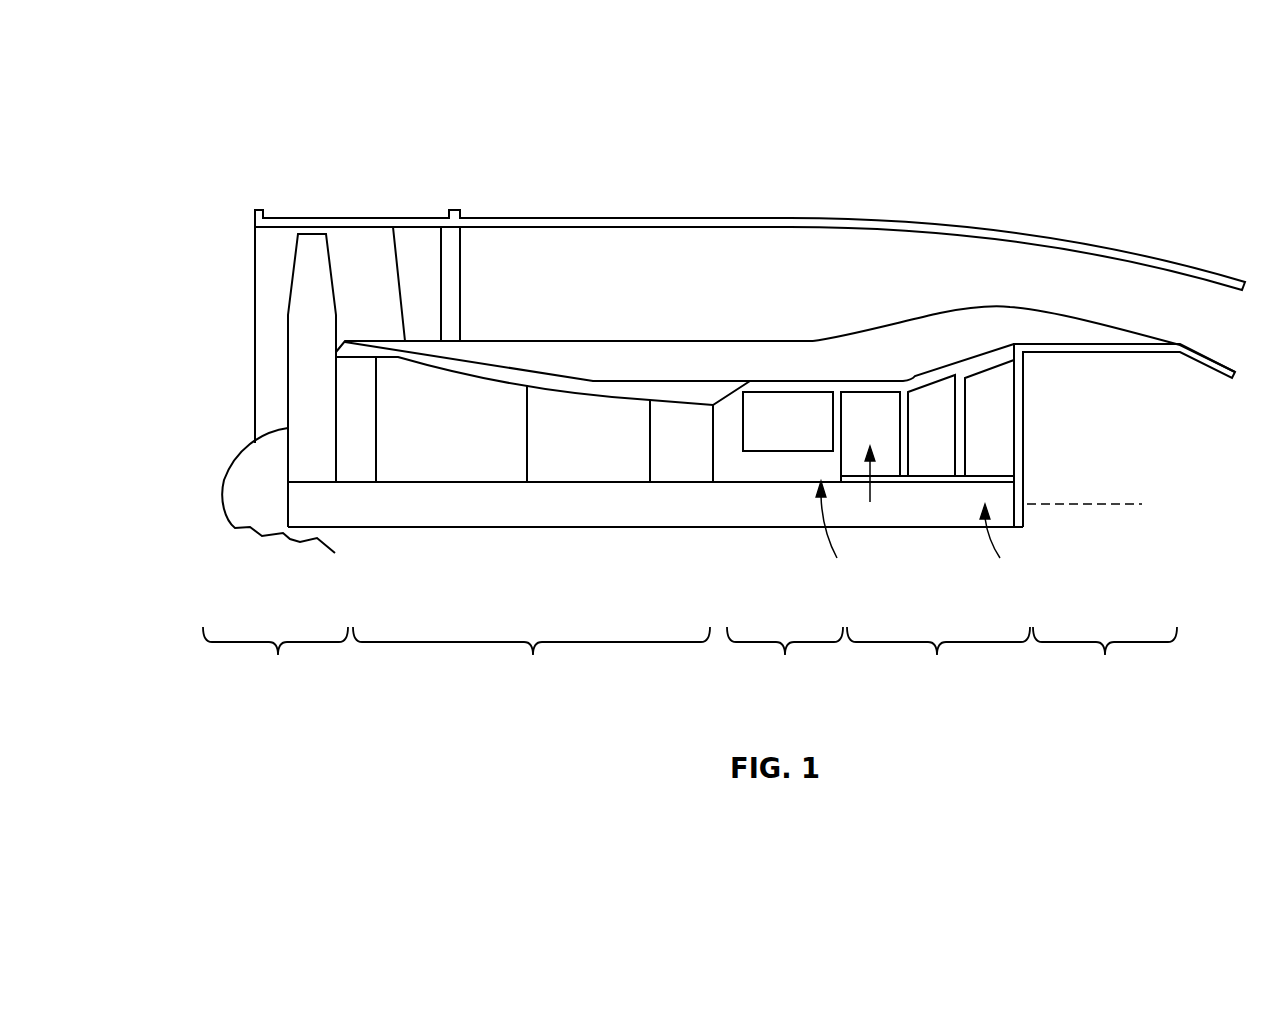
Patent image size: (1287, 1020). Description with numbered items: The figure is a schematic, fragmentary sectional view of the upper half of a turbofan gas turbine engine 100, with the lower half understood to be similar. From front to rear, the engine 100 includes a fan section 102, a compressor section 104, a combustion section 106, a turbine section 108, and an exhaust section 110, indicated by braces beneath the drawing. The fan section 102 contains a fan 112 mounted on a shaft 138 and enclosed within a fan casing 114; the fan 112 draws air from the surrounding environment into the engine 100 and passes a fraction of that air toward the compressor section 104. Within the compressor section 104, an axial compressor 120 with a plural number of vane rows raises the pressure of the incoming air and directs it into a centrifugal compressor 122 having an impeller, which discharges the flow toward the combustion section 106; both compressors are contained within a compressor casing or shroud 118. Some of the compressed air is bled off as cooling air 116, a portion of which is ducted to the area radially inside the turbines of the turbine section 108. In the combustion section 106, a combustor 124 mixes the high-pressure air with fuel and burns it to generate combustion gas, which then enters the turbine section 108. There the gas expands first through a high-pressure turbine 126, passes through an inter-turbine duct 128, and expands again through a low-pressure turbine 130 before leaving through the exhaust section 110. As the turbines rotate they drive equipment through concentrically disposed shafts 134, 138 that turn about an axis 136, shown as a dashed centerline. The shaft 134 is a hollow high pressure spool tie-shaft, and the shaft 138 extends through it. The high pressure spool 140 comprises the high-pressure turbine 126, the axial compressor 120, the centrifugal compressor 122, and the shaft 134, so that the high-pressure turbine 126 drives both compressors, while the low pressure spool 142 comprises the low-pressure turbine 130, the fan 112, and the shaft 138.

The engine 100 is at (288, 128).
The fan section 102 is at (275, 562).
The compressor section 104 is at (531, 526).
The combustion section 106 is at (785, 661).
The turbine section 108 is at (938, 661).
The exhaust section 110 is at (1105, 661).
The fan 112 is at (303, 359).
The fan casing 114 is at (380, 222).
The cooling air 116 is at (870, 493).
The compressor casing or shroud 118 is at (685, 392).
The axial compressor 120 is at (582, 462).
The centrifugal compressor 122 is at (682, 462).
The combustor 124 is at (780, 407).
The high-pressure turbine 126 is at (864, 410).
The inter-turbine duct 128 is at (923, 400).
The low-pressure turbine 130 is at (1005, 400).
The shaft 134 is at (782, 485).
The axis 136 is at (1088, 505).
The shaft 138 is at (912, 513).
The high pressure spool 140 is at (838, 537).
The low pressure spool 142 is at (1002, 548).